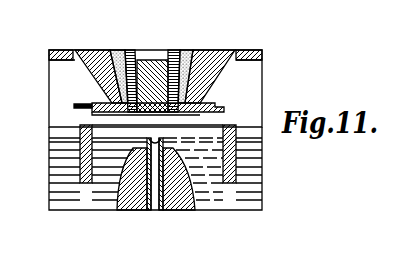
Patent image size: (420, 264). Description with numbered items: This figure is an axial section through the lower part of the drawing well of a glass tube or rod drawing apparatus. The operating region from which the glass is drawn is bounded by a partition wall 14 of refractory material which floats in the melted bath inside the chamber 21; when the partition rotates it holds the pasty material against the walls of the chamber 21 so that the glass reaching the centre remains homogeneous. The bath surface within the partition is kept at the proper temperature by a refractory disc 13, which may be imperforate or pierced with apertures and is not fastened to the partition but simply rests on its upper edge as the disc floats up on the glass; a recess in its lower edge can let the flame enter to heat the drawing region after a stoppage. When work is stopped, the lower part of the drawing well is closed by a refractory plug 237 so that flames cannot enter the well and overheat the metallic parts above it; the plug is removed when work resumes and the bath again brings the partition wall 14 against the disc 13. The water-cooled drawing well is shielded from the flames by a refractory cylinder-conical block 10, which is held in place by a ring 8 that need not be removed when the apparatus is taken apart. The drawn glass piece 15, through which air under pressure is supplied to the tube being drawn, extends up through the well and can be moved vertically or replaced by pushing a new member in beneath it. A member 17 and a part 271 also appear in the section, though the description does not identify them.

The ring 8 is at (128, 89).
The cylinder-conical block 10 is at (208, 58).
The refractory disc 13 is at (226, 107).
The partition wall 14 is at (230, 168).
The drawn glass piece 15 is at (148, 210).
The flange strip 17 is at (247, 51).
The chamber 21 is at (183, 200).
The plug 237 is at (143, 64).
The packing 271 is at (112, 55).